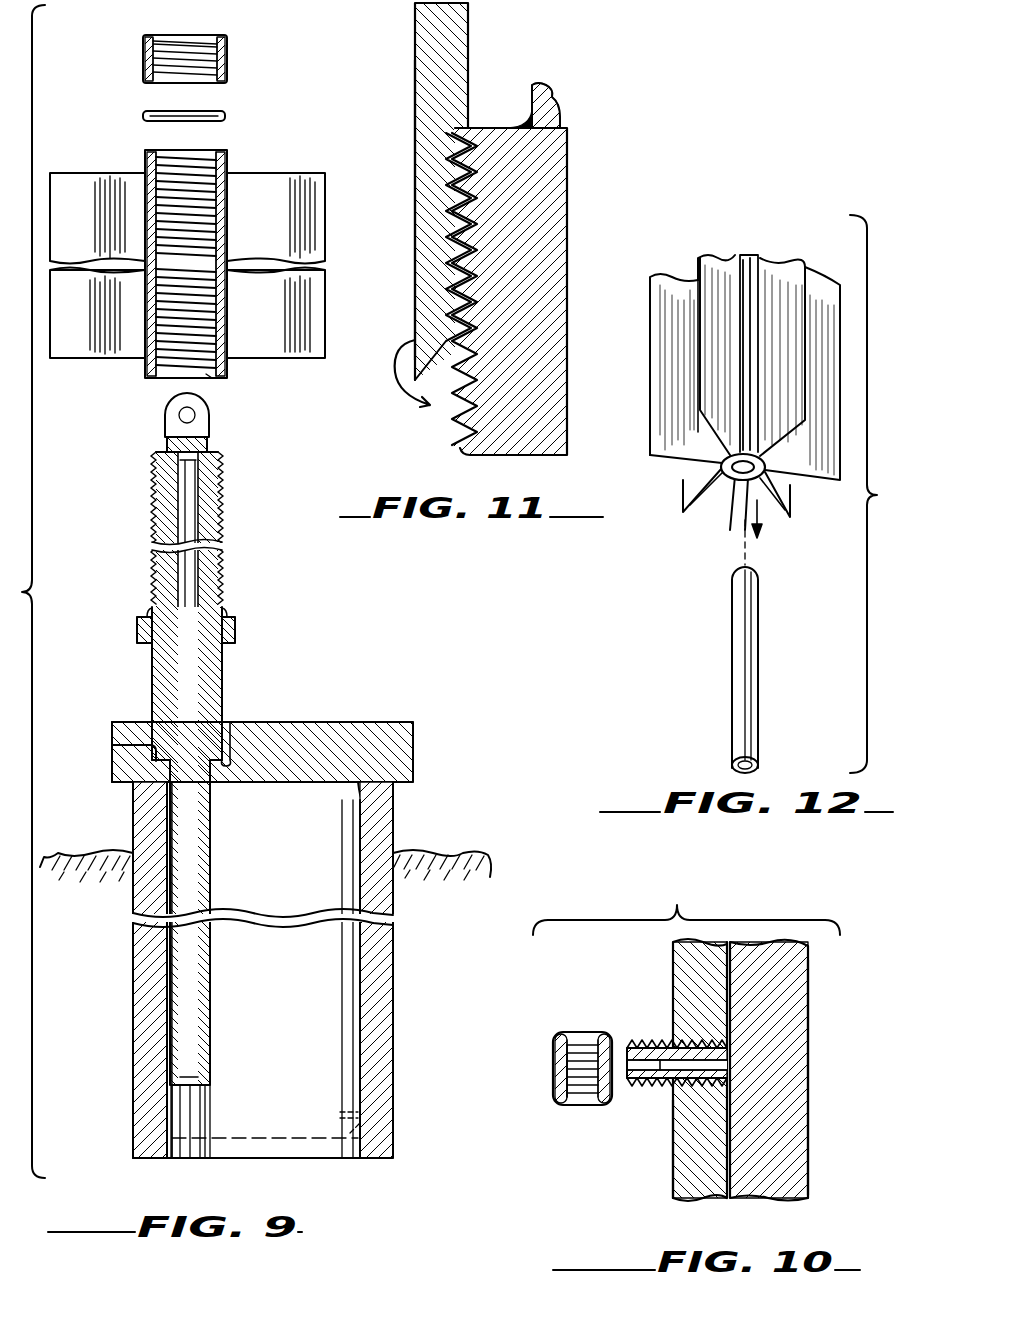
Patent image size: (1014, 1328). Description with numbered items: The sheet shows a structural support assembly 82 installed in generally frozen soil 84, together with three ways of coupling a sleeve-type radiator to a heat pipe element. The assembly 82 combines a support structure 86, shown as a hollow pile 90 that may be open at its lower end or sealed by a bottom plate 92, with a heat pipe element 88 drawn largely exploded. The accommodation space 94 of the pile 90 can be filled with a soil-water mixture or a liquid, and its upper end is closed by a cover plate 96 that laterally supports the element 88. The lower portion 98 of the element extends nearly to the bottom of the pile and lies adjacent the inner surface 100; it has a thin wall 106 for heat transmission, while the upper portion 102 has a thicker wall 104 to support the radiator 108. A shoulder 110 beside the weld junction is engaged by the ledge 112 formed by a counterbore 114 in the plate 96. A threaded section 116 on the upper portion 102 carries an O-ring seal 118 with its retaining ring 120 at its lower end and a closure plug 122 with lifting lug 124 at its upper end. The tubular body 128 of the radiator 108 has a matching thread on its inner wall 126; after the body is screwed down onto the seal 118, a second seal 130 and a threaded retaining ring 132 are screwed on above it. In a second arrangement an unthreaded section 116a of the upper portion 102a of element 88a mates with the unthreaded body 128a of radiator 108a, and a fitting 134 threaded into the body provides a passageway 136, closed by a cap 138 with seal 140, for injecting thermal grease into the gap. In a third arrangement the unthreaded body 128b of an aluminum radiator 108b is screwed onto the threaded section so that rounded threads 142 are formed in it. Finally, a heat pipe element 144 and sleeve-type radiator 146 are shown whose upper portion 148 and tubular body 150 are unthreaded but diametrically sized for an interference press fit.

In FIG. 9, the structural support assembly 82 is at (353, 588).
In FIG. 9, the frozen soil 84 is at (452, 854).
In FIG. 9, the support structure 86 is at (132, 834).
In FIG. 9, the heat pipe element 88 is at (184, 606).
In FIG. 11, the heat pipe element 88 is at (501, 291).
In FIG. 9, the hollow pile 90 is at (393, 1050).
In FIG. 9, the bottom plate 92 is at (394, 1109).
In FIG. 9, the accommodation space 94 is at (340, 997).
In FIG. 9, the cover plate 96 is at (372, 722).
In FIG. 9, the lower portion 98 is at (170, 965).
In FIG. 9, the inner surface 100 is at (173, 1108).
In FIG. 9, the upper portion 102 is at (152, 662).
In FIG. 9, the thicker wall 104 is at (223, 664).
In FIG. 9, the wall 106 is at (212, 839).
In FIG. 9, the radiator 108 is at (285, 173).
In FIG. 9, the shoulder 110 is at (114, 744).
In FIG. 9, the ledge 112 is at (240, 784).
In FIG. 9, the counterbore 114 is at (229, 720).
In FIG. 9, the threaded section 116 is at (153, 518).
In FIG. 11, the threaded section 116 is at (458, 424).
In FIG. 9, the seal 118 is at (150, 609).
In FIG. 9, the retaining ring 120 is at (137, 631).
In FIG. 9, the closure plug 122 is at (178, 468).
In FIG. 9, the lifting lug 124 is at (166, 419).
In FIG. 11, the lifting lug 124 is at (554, 125).
In FIG. 9, the inner wall 126 is at (208, 380).
In FIG. 9, the tubular body 128 is at (145, 154).
In FIG. 9, the seal 130 is at (143, 113).
In FIG. 9, the threaded retaining ring 132 is at (143, 45).
In FIG. 10, the fitting 134 is at (639, 1035).
In FIG. 10, the passageway 136 is at (653, 1070).
In FIG. 10, the cap 138 is at (567, 1102).
In FIG. 10, the seal 140 is at (553, 1071).
In FIG. 11, the rounded threads 142 is at (455, 190).
In FIG. 12, the heat pipe element 144 is at (732, 742).
In FIG. 12, the sleeve-type radiator 146 is at (700, 257).
In FIG. 12, the upper portion 148 is at (732, 587).
In FIG. 12, the tubular body 150 is at (722, 466).
In FIG. 10, the sleeve-type radiator 108a is at (673, 957).
In FIG. 11, the sleeve-type radiator 108b is at (450, 191).
In FIG. 10, the body 128a is at (673, 1185).
In FIG. 11, the body 128b is at (415, 70).
In FIG. 10, the heat pipe element 88a is at (808, 964).
In FIG. 10, the upper portion 102a is at (808, 1042).
In FIG. 10, the unthreaded section 116a is at (808, 1165).